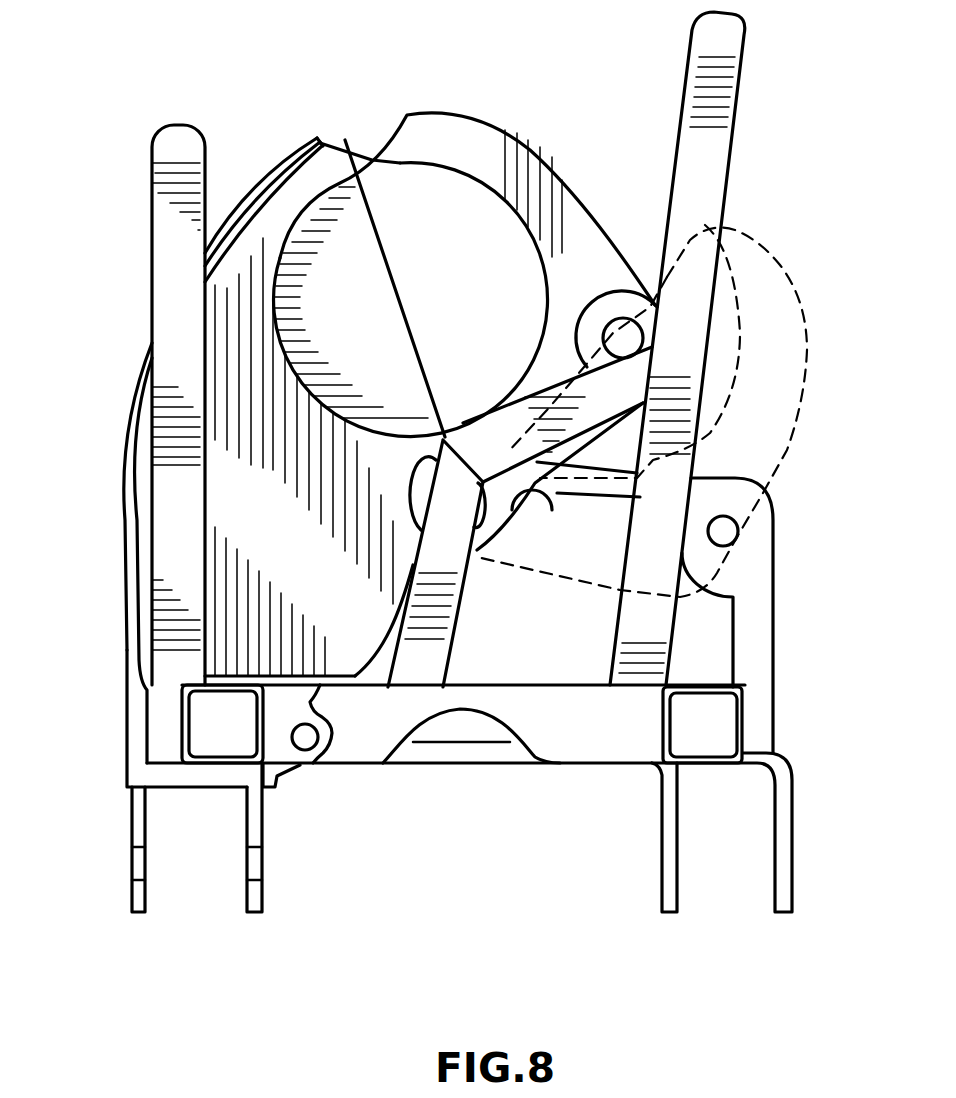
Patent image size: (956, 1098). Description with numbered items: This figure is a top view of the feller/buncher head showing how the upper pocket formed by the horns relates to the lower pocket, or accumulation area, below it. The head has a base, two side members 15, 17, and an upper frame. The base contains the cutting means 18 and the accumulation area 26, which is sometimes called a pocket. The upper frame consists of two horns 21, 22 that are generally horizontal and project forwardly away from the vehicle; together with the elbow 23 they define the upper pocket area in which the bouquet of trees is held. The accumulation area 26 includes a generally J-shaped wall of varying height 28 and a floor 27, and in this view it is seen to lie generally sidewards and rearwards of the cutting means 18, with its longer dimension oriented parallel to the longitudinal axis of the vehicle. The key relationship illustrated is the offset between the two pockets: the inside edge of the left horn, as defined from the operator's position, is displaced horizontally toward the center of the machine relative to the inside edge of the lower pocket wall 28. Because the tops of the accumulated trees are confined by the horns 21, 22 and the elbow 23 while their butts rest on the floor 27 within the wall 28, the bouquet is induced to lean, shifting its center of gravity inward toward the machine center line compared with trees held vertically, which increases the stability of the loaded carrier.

The side member 15 is at (713, 730).
The side member 17 is at (200, 707).
The cutting means 18 is at (363, 212).
The horn 21 is at (163, 252).
The horn 22 is at (707, 205).
The elbow 23 is at (627, 377).
The accumulation area 26 is at (310, 580).
The floor 27 is at (333, 640).
The wall of varying height 28 is at (127, 593).